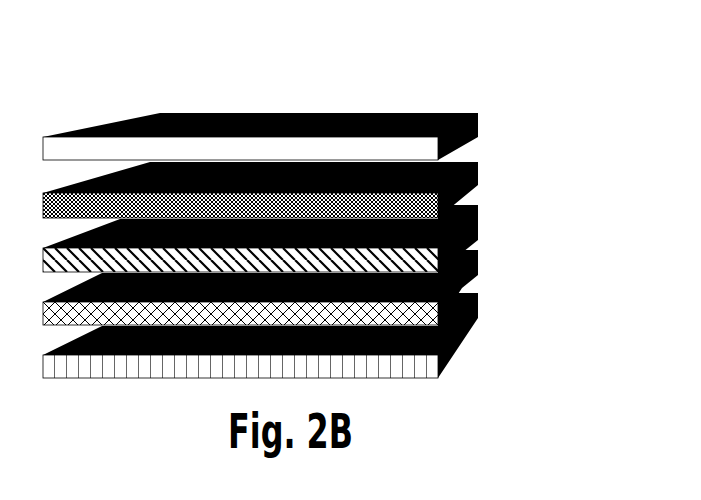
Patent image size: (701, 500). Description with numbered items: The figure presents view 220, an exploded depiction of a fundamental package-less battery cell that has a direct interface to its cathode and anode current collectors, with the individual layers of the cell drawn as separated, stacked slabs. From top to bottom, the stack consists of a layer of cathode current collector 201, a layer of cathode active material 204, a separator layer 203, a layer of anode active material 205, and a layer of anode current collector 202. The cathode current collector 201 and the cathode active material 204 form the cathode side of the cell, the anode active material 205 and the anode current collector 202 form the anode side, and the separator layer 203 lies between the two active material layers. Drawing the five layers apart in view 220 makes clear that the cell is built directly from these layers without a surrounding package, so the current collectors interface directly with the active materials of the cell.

The view 220 is at (363, 189).
The cathode current collector 201 is at (460, 149).
The cathode active material 204 is at (460, 200).
The separator layer 203 is at (460, 247).
The anode active material 205 is at (462, 288).
The anode current collector 202 is at (460, 340).